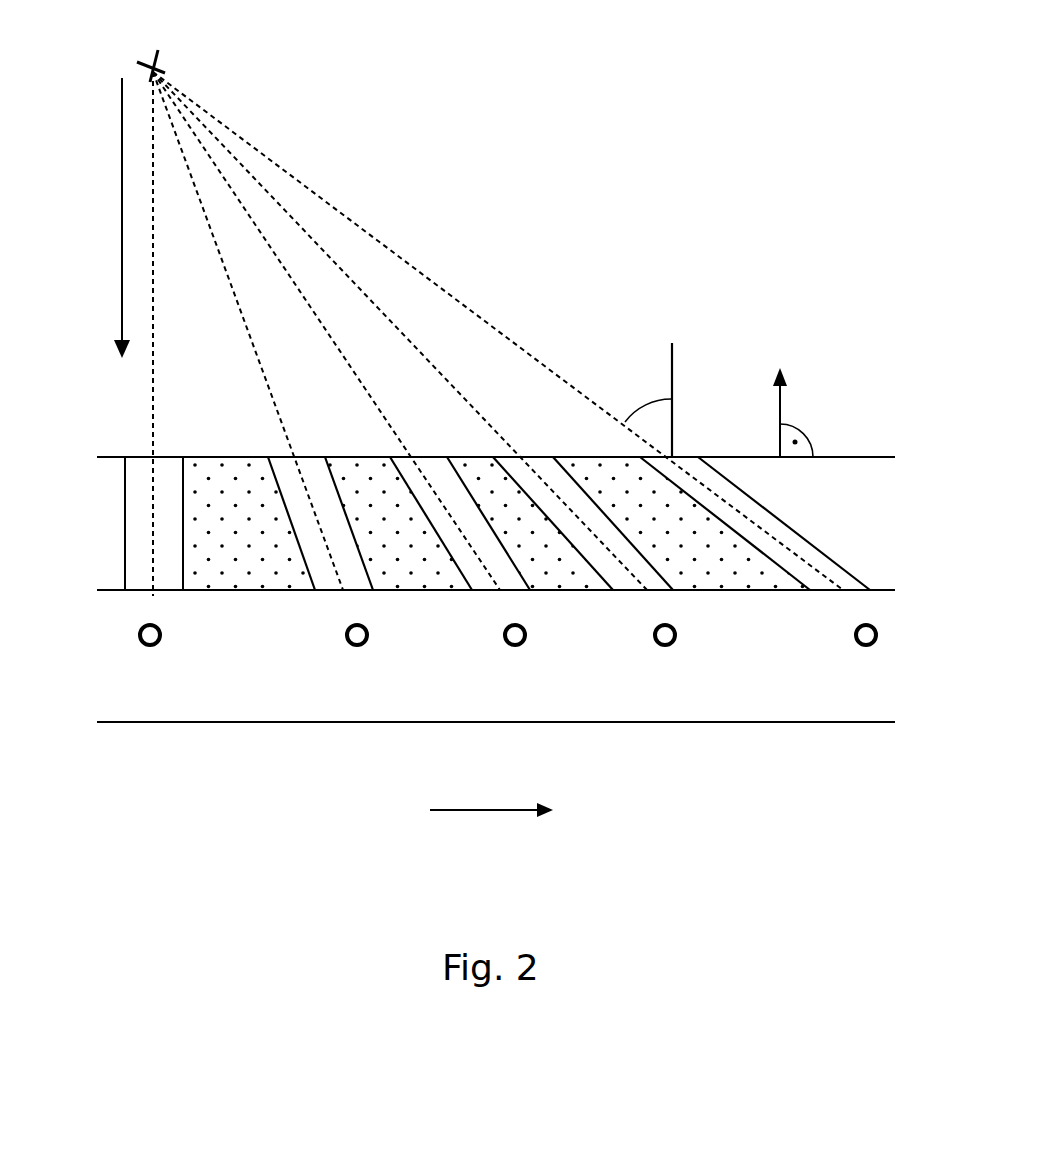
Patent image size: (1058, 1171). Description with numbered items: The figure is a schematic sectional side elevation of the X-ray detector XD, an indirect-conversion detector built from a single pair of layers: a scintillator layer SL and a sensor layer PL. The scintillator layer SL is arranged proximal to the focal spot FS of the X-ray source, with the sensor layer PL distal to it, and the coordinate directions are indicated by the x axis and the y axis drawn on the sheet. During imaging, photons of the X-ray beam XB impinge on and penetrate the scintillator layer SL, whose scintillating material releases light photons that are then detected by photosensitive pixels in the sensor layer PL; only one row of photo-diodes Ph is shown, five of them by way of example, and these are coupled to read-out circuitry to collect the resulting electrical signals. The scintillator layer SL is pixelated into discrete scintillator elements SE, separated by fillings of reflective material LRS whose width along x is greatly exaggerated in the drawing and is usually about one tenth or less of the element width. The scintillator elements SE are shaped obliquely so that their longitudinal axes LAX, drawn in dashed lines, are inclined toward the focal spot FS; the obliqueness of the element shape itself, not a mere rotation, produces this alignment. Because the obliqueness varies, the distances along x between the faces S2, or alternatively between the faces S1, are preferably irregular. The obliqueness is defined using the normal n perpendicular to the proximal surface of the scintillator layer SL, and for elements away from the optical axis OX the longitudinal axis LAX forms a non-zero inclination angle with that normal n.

The focal spot FS is at (163, 70).
The X-ray beam XB is at (367, 222).
The X-ray detector XD is at (781, 234).
The optical axis OX is at (156, 397).
The face of scintillator element S1 is at (152, 457).
The scintillator element SE is at (140, 532).
The face of scintillator element S2 is at (150, 592).
The longitudinal axis LAX is at (440, 470).
The scintillator layer SL is at (900, 459).
The sensor layer PL is at (900, 593).
The reflective material filling LRS is at (413, 567).
The photo-diode Ph is at (665, 647).
The normal n is at (793, 412).
The x axis x is at (491, 821).
The y coordinate axis y is at (111, 218).